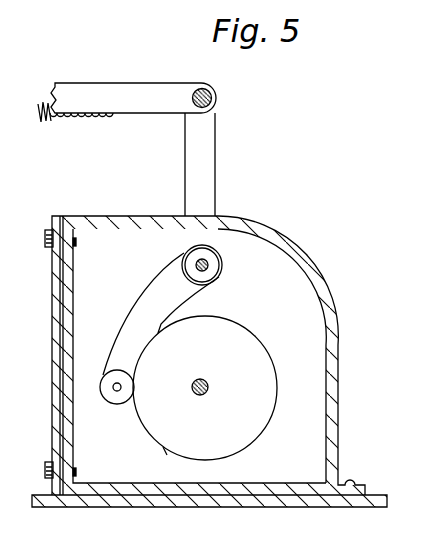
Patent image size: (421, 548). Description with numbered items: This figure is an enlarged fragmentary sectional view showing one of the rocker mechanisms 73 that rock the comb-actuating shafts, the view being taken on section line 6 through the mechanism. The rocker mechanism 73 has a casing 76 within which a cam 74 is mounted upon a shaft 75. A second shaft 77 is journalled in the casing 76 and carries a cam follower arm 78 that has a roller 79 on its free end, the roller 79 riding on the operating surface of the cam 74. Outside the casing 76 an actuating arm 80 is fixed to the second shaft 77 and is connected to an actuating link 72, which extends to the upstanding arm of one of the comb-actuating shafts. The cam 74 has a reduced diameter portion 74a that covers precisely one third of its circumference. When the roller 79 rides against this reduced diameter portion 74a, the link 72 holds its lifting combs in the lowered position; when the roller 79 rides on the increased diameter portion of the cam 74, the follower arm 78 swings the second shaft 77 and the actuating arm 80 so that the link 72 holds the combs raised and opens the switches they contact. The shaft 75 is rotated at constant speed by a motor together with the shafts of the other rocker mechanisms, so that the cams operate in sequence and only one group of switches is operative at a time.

The section line 6— 6 is at (202, 68).
The actuating link 72 is at (124, 92).
The actuating arm 80 is at (210, 183).
The rocker mechanism 73 is at (290, 242).
The casing 76 is at (326, 312).
The second shaft 77 is at (214, 270).
The cam follower arm 78 is at (158, 289).
The roller 79 is at (118, 398).
The cam 74 is at (213, 363).
The reduced diameter portion 74a is at (159, 443).
The shaft 75 is at (208, 387).